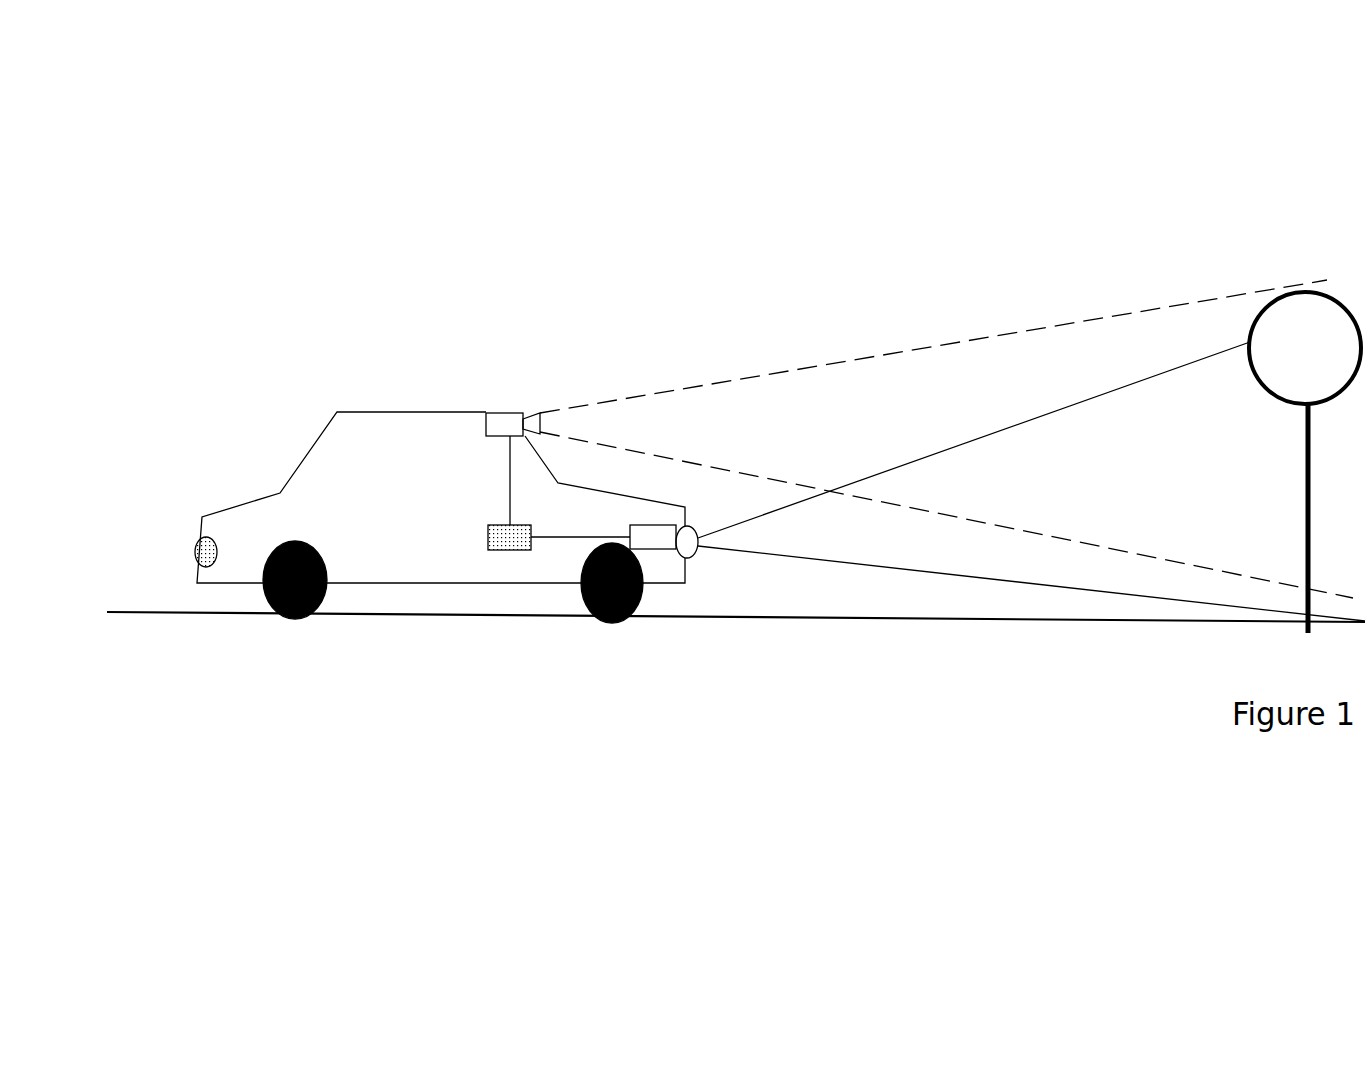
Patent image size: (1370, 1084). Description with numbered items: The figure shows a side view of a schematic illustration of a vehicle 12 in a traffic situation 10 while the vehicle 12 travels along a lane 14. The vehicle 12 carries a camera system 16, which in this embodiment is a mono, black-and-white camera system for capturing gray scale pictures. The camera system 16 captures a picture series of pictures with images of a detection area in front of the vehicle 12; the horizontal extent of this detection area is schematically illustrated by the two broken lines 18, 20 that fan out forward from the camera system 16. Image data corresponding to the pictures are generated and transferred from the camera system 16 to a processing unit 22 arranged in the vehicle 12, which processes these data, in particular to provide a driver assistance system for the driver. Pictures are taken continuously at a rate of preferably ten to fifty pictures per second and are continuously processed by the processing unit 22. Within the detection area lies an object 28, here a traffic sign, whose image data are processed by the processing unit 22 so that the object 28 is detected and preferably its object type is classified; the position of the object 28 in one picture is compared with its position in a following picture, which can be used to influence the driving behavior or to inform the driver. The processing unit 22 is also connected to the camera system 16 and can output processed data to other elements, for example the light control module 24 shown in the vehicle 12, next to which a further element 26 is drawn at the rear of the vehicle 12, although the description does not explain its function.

The traffic situation 10 is at (730, 239).
The vehicle 12 is at (408, 413).
The lane 14 is at (953, 617).
The camera system 16 is at (508, 413).
The broken line 18 is at (1020, 527).
The broken line 20 is at (893, 347).
The processing unit 22 is at (512, 537).
The light control module 24 is at (653, 537).
The GPS antenna 26 is at (688, 550).
The object 28 is at (1305, 520).